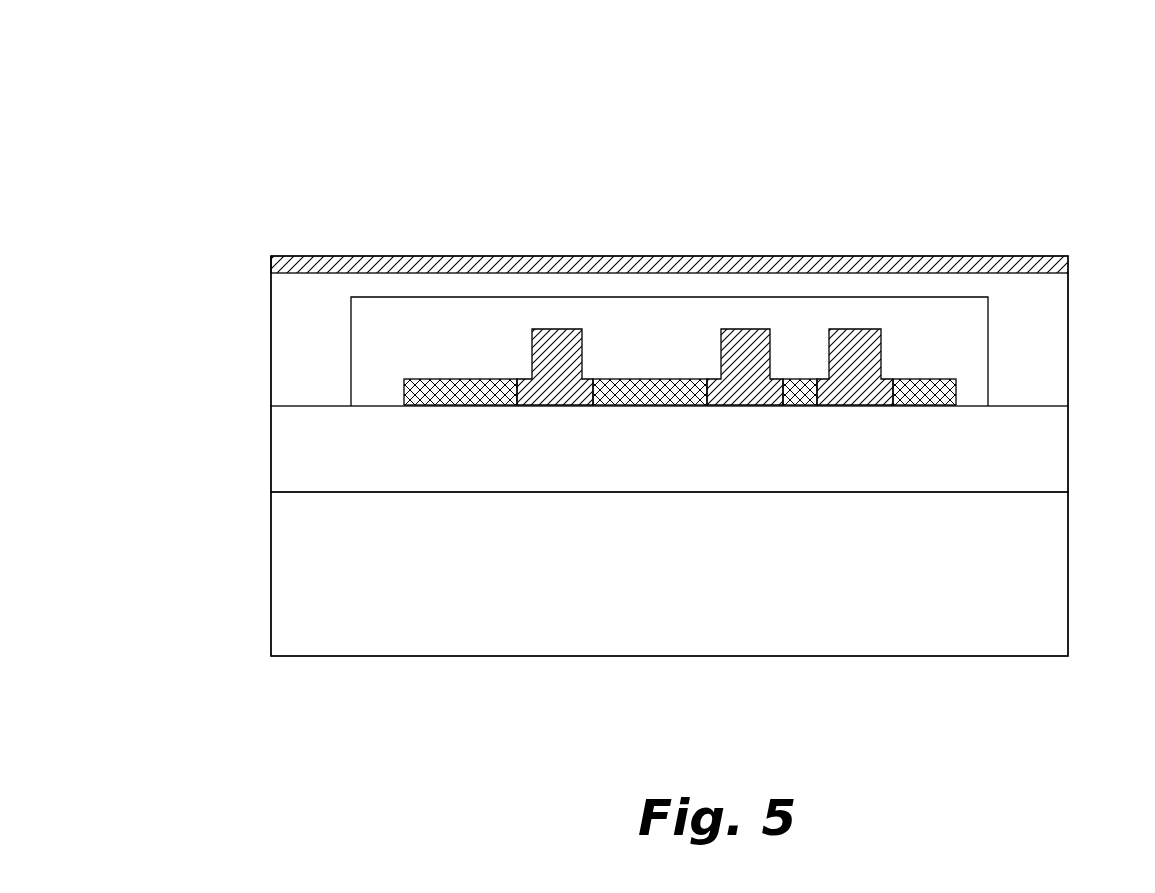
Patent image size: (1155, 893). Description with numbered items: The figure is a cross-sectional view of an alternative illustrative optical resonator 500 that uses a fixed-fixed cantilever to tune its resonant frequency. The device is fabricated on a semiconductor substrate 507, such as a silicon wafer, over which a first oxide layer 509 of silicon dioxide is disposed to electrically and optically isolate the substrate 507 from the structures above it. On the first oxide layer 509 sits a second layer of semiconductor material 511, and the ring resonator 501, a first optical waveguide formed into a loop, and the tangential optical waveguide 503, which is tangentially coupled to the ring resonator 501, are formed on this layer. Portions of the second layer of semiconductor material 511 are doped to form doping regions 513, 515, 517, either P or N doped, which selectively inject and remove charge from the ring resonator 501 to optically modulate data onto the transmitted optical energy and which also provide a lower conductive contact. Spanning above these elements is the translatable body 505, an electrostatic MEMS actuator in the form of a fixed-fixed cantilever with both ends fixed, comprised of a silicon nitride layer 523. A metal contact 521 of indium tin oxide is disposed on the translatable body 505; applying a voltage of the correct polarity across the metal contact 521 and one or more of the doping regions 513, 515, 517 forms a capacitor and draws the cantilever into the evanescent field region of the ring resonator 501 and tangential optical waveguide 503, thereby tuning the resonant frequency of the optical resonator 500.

The optical resonator 500 is at (176, 83).
The ring resonator 501 is at (531, 353).
The tangential optical waveguide 503 is at (870, 352).
The translatable body 505 is at (393, 250).
The semiconductor substrate 507 is at (1055, 595).
The first oxide layer 509 is at (1055, 453).
The second layer of semiconductor material 511 is at (922, 383).
The doping region 513 is at (668, 388).
The doping region 515 is at (442, 387).
The doping region 517 is at (803, 390).
The metal contact 521 is at (576, 262).
The silicon nitride layer 523 is at (272, 268).